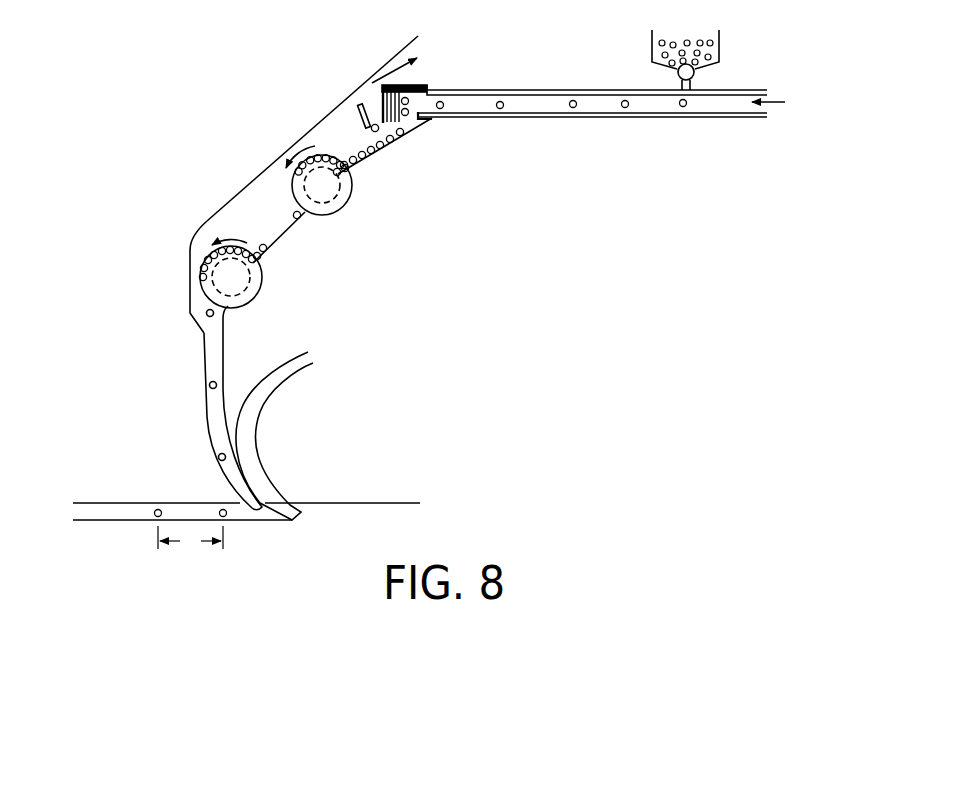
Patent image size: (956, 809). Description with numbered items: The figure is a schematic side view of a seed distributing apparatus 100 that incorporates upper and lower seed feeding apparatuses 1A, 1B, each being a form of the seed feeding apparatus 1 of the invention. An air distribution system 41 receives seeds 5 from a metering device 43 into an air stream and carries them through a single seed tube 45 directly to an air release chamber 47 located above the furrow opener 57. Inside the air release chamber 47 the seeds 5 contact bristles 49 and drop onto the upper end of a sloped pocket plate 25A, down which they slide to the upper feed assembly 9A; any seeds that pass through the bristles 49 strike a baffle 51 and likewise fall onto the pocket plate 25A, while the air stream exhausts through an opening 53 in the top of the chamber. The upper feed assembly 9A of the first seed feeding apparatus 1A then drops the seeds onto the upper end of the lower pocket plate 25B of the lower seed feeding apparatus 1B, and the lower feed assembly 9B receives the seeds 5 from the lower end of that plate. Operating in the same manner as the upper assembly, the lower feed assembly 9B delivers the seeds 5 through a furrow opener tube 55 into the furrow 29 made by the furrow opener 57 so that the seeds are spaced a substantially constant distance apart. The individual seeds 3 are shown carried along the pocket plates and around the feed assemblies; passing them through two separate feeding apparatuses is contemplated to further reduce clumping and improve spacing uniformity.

The seed feeding apparatus 1 is at (259, 162).
The upper seed feeding apparatus 1A is at (304, 184).
The lower seed feeding apparatus 1B is at (181, 276).
The balls 3 is at (340, 150).
The seeds 5 is at (686, 42).
The upper feed assembly 9A is at (357, 206).
The lower feed assembly 9B is at (266, 289).
The sloped pocket plate 25A is at (380, 156).
The lower pocket plate 25B is at (289, 236).
The furrow 29 is at (137, 510).
The air distribution system 41 is at (559, 129).
The metering device 43 is at (694, 77).
The seed tube 45 is at (543, 90).
The air release chamber 47 is at (360, 87).
The bristles 49 is at (397, 118).
The baffle 51 is at (352, 120).
The opening 53 is at (393, 83).
The furrow opener tube 55 is at (206, 417).
The furrow opener 57 is at (295, 507).
The seed distributing apparatus 100 is at (524, 206).